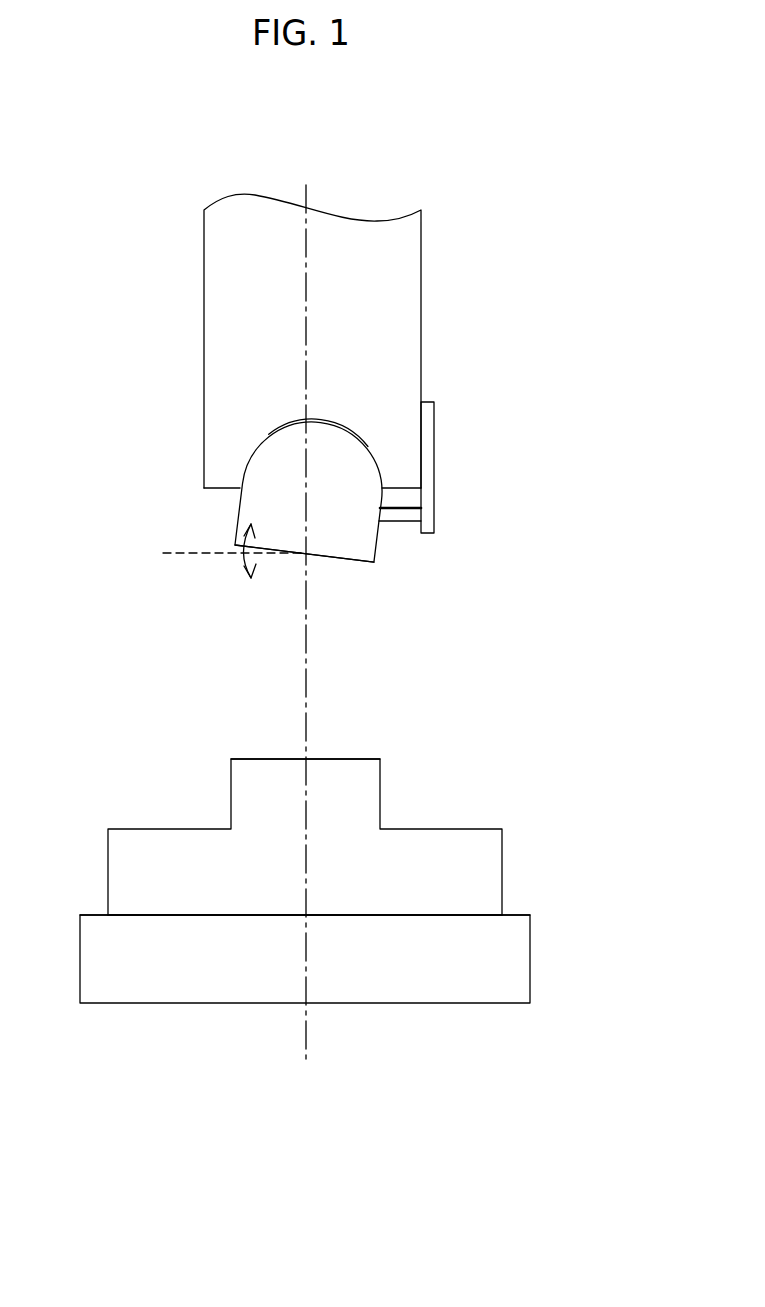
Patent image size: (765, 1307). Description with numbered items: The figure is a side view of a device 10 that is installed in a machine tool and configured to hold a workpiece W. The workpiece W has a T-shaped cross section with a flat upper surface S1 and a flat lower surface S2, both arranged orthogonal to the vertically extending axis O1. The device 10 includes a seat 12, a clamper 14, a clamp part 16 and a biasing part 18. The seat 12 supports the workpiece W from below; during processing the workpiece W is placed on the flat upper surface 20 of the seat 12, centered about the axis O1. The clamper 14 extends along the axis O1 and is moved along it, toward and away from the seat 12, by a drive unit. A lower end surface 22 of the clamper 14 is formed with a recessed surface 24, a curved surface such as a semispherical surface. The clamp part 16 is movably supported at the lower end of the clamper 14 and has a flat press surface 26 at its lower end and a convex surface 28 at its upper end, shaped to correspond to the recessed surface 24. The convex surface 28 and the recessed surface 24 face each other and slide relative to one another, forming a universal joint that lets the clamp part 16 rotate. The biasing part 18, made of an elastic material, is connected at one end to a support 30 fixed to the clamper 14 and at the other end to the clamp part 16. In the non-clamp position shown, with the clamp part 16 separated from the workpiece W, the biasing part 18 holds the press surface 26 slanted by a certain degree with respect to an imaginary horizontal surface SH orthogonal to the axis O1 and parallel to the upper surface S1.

The device 10 is at (512, 157).
The seat 12 is at (512, 968).
The clamper 14 is at (398, 271).
The clamp part 16 is at (360, 541).
The biasing part 18 is at (413, 515).
The upper surface 20 is at (159, 915).
The lower end surface 22 is at (218, 489).
The recessed surface 24 is at (261, 446).
The press surface 26 is at (345, 563).
The convex surface 28 is at (338, 425).
The support 30 is at (430, 421).
The workpiece W is at (484, 868).
The upper surface S1 is at (261, 759).
The lower surface S2 is at (204, 915).
The imaginary horizontal surface SH is at (183, 553).
The axis O1 is at (305, 1055).